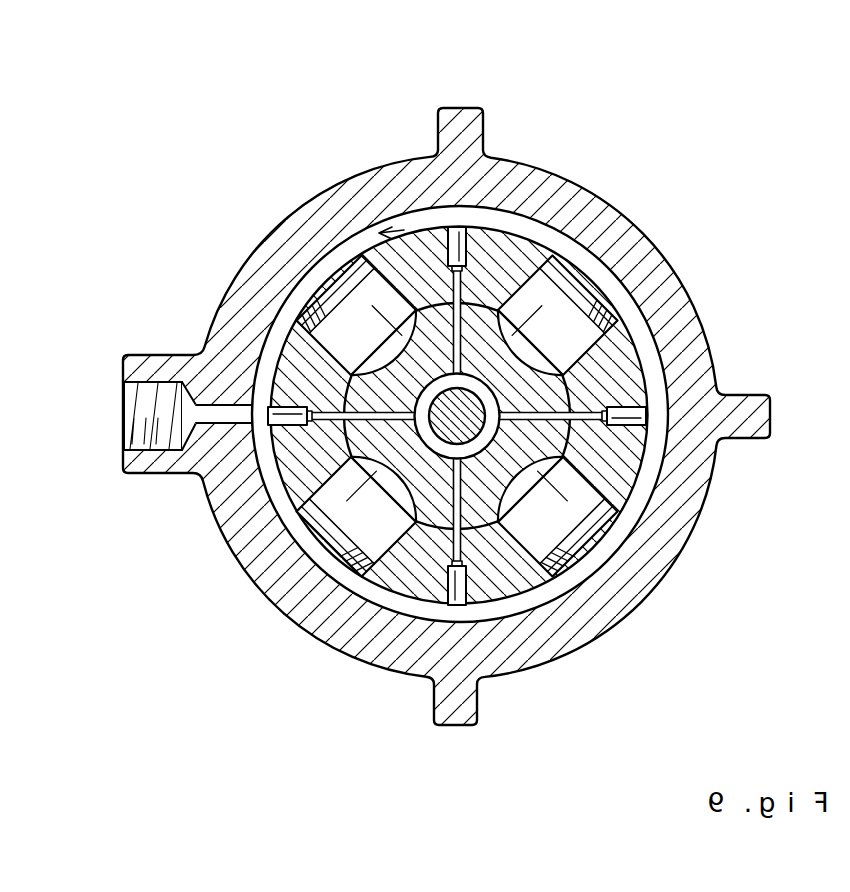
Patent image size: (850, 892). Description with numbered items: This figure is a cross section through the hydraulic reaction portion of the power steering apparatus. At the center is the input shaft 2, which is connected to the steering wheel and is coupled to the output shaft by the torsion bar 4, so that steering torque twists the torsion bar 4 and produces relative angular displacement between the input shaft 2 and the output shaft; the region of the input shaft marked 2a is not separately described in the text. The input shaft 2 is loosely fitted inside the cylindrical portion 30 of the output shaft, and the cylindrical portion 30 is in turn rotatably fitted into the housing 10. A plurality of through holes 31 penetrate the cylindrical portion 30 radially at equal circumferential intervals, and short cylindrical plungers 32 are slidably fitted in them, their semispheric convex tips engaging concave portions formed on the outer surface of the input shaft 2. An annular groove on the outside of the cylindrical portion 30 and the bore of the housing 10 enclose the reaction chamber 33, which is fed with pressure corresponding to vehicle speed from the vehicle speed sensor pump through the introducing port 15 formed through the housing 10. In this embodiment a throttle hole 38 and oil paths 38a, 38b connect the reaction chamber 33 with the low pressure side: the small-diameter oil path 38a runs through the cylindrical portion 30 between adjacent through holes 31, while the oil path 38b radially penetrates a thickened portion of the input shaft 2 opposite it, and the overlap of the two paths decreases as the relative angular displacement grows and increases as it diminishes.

The input shaft 2 is at (652, 356).
The housing inner wall 2a is at (566, 262).
The torsion bar 4 is at (473, 458).
The housing 10 is at (388, 665).
The introducing port 15 is at (122, 422).
The cylindrical portion 30 is at (497, 208).
The through holes 31 is at (336, 270).
The plungers 32 is at (322, 288).
The reaction chamber 33 is at (418, 208).
The throttle hole 38 is at (453, 420).
The oil path 38a is at (443, 268).
The oil path 38b is at (372, 409).